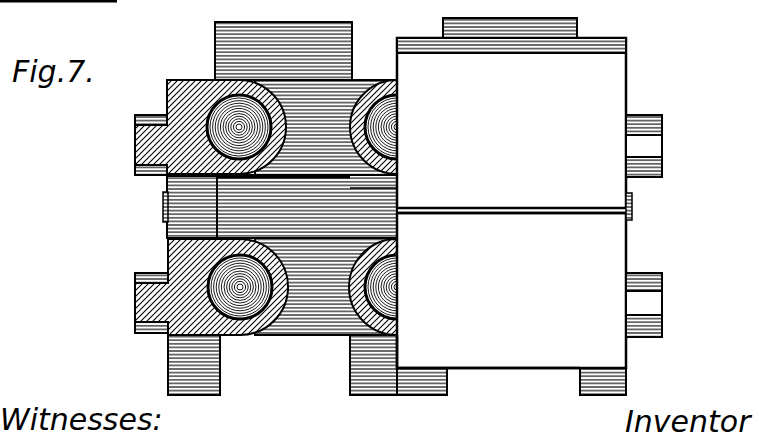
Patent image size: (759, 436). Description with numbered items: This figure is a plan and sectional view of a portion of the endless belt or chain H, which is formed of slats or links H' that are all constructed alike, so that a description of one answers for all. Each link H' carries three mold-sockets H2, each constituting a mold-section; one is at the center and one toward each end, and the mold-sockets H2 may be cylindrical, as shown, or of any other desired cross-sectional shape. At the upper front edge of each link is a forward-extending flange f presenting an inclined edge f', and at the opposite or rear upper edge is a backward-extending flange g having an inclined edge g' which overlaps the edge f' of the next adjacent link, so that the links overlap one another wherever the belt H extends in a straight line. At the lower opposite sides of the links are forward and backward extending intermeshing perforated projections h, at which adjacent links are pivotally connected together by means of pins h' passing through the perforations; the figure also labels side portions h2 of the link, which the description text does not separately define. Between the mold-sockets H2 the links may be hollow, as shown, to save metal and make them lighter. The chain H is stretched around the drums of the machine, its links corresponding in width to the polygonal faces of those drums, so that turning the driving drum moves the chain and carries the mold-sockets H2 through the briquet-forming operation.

The intermeshing perforated projections h is at (376, 215).
The pins h' is at (401, 210).
The flange h2 is at (695, 305).
The endless belt or chain H is at (226, 207).
The links H' is at (576, 203).
The mold-sockets H2 is at (252, 157).
The forward-extending flange f is at (527, 140).
The inclined edge f' is at (511, 130).
The backward-extending flange g is at (488, 294).
The inclined edge g' is at (432, 385).